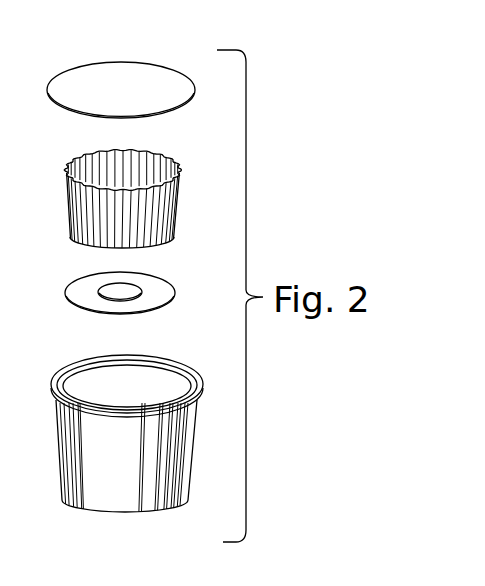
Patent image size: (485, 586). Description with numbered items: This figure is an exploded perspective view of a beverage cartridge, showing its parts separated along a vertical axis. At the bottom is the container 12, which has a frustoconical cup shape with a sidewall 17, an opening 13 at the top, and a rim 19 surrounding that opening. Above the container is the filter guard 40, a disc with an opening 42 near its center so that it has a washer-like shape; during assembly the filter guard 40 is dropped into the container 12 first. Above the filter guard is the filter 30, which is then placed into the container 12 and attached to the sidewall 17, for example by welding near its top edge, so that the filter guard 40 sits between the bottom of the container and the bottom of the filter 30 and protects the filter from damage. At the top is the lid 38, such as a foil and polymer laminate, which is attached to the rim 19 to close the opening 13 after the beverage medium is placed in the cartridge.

The container 12 is at (142, 440).
The opening 13 is at (162, 383).
The sidewall 17 is at (193, 445).
The rim 19 is at (203, 373).
The filter 30 is at (180, 206).
The lid 38 is at (153, 67).
The filter guard 40 is at (142, 288).
The opening 42 is at (130, 285).